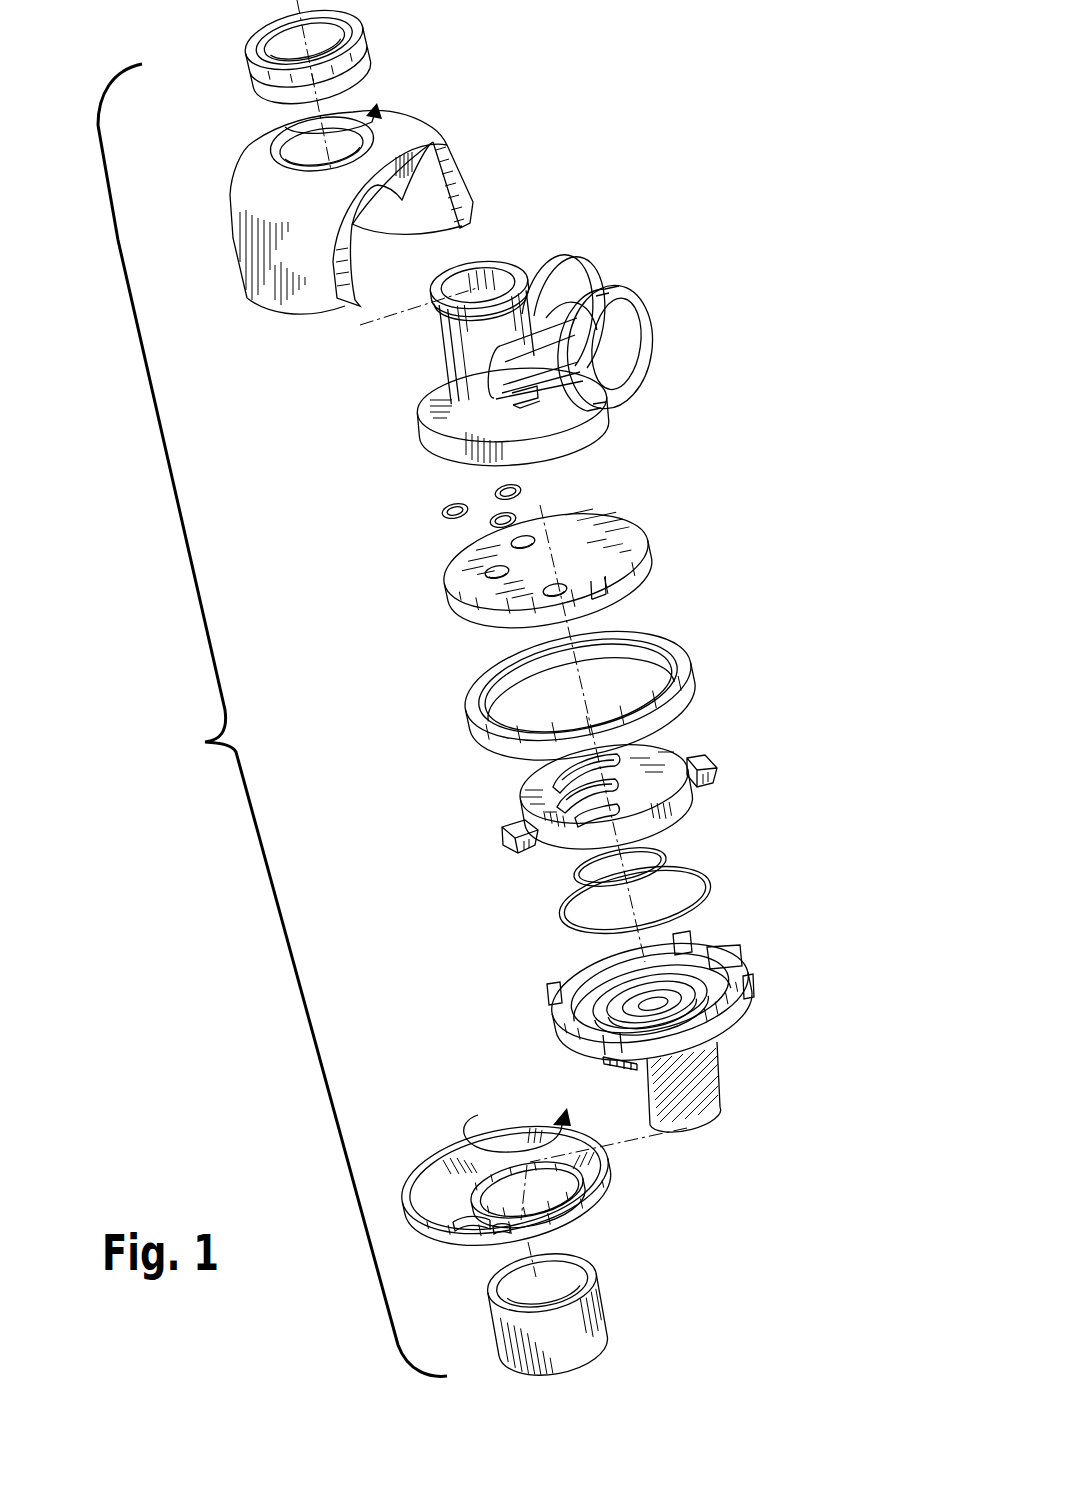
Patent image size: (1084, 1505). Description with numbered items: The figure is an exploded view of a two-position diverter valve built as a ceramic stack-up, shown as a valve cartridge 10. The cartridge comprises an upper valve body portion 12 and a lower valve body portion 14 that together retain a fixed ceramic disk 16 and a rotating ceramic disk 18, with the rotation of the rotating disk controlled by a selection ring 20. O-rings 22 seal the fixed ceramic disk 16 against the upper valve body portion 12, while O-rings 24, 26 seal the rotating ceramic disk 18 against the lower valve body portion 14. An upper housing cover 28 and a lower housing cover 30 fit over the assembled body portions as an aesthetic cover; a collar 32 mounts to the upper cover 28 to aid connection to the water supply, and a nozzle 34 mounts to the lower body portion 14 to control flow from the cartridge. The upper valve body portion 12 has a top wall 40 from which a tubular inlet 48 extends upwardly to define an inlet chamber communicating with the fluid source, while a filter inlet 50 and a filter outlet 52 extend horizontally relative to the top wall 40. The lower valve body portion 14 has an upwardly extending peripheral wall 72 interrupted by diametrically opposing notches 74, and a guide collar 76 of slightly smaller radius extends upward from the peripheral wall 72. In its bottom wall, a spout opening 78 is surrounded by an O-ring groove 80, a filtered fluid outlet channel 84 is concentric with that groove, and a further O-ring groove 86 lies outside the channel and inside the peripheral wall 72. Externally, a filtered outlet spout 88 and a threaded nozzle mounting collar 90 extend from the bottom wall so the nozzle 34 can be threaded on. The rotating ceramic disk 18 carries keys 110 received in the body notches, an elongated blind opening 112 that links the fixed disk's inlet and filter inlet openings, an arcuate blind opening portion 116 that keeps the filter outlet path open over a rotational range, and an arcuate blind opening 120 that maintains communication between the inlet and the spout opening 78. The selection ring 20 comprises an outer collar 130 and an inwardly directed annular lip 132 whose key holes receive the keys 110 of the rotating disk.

The valve cartridge 10 is at (128, 725).
The upper valve body portion 12 is at (534, 318).
The lower valve body portion 14 is at (662, 1026).
The fixed ceramic disk 16 is at (642, 536).
The rotating ceramic disk 18 is at (606, 787).
The selection ring 20 is at (577, 693).
The O-rings 22 is at (495, 517).
The O-ring 24 is at (654, 856).
The O-ring 26 is at (712, 898).
The upper housing cover 28 is at (438, 127).
The lower housing cover 30 is at (609, 1187).
The collar 32 is at (343, 47).
The nozzle 34 is at (607, 1302).
The top wall 40 is at (432, 389).
The tubular inlet 48 is at (484, 277).
The filter inlet 50 is at (580, 257).
The filter outlet 52 is at (642, 308).
The peripheral wall 72 is at (560, 1002).
The notches 74 is at (735, 960).
The guide collar 76 is at (563, 958).
The spout opening 78 is at (640, 992).
The O-ring groove 80 is at (595, 1030).
The filtered fluid outlet channel 84 is at (585, 1010).
The O-ring groove 86 is at (694, 950).
The filtered outlet spout 88 is at (722, 1080).
The nozzle mounting collar 90 is at (610, 1063).
The keys 110 is at (716, 760).
The elongated blind opening 112 is at (558, 788).
The arcuate blind opening portion 116 is at (578, 825).
The arcuate blind opening 120 is at (553, 807).
The outer collar 130 is at (463, 688).
The annular lip 132 is at (626, 650).